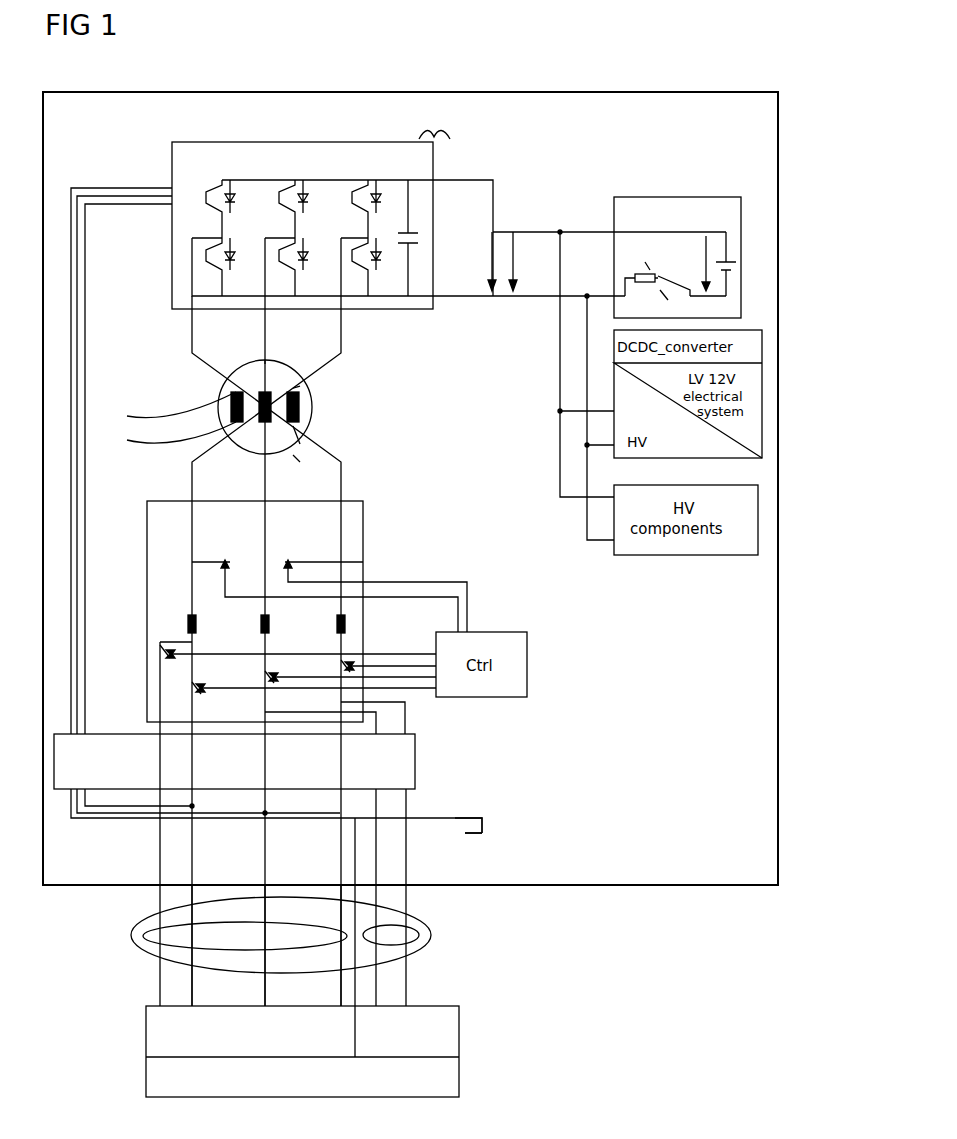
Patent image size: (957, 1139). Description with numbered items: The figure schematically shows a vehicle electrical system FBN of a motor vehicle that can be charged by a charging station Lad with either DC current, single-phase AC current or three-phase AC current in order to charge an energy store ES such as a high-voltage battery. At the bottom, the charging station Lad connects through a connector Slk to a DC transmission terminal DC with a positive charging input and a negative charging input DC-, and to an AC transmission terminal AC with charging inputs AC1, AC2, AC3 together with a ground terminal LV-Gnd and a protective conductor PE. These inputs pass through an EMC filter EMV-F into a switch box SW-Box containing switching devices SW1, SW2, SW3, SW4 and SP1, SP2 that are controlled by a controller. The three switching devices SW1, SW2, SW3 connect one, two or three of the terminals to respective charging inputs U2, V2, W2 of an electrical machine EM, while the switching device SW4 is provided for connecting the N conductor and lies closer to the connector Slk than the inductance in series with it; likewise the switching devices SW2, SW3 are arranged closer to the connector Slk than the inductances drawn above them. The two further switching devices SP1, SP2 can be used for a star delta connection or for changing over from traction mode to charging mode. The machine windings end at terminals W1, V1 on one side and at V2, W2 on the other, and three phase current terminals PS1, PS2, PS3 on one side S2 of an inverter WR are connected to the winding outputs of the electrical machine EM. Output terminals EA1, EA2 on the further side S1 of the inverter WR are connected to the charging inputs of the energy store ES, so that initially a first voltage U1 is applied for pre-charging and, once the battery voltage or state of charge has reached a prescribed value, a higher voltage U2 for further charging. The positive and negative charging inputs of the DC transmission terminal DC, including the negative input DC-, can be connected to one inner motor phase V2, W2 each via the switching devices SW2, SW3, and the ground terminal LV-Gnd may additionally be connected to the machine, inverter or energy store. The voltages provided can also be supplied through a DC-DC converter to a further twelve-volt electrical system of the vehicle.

The vehicle electrical system FBN is at (410, 473).
The inverter WR is at (433, 152).
The further side of the inverter S1 is at (434, 121).
The output terminal EA1 is at (437, 180).
The output terminal EA2 is at (437, 297).
The DC link capacitor TP is at (413, 238).
The first voltage U1 is at (299, 329).
The higher voltage U2 is at (322, 342).
The energy store ES is at (672, 197).
The one side of the inverter S2 is at (173, 312).
The phase current terminal PS1 is at (192, 336).
The phase current terminal PS2 is at (265, 313).
The phase current terminal PS3 is at (341, 309).
The electrical machine EM is at (310, 391).
The winding terminal W1 is at (272, 362).
The winding terminal V1 is at (302, 386).
The charging input / motor phase W2 is at (302, 446).
The charging input / motor phase V2 is at (300, 463).
The switch box SW-Box is at (363, 531).
The switching device SP1 is at (228, 561).
The switching device SP2 is at (300, 561).
The switching device SW1 is at (188, 689).
The switching device SW2 is at (265, 681).
The switching device SW3 is at (341, 670).
The switching device SW4 is at (160, 656).
The EMC filter EMV-F is at (415, 761).
The ground terminal LV-Gnd is at (484, 834).
The protective earth conductor PE is at (358, 881).
The charging input AC1 is at (190, 881).
The charging input AC2 is at (262, 881).
The charging input AC3 is at (338, 881).
The AC transmission terminal AC is at (132, 936).
The DC transmission terminal DC is at (432, 946).
The charging plug contact Slk is at (418, 941).
The charging input DC- is at (408, 1005).
The charging station Lad is at (459, 1081).